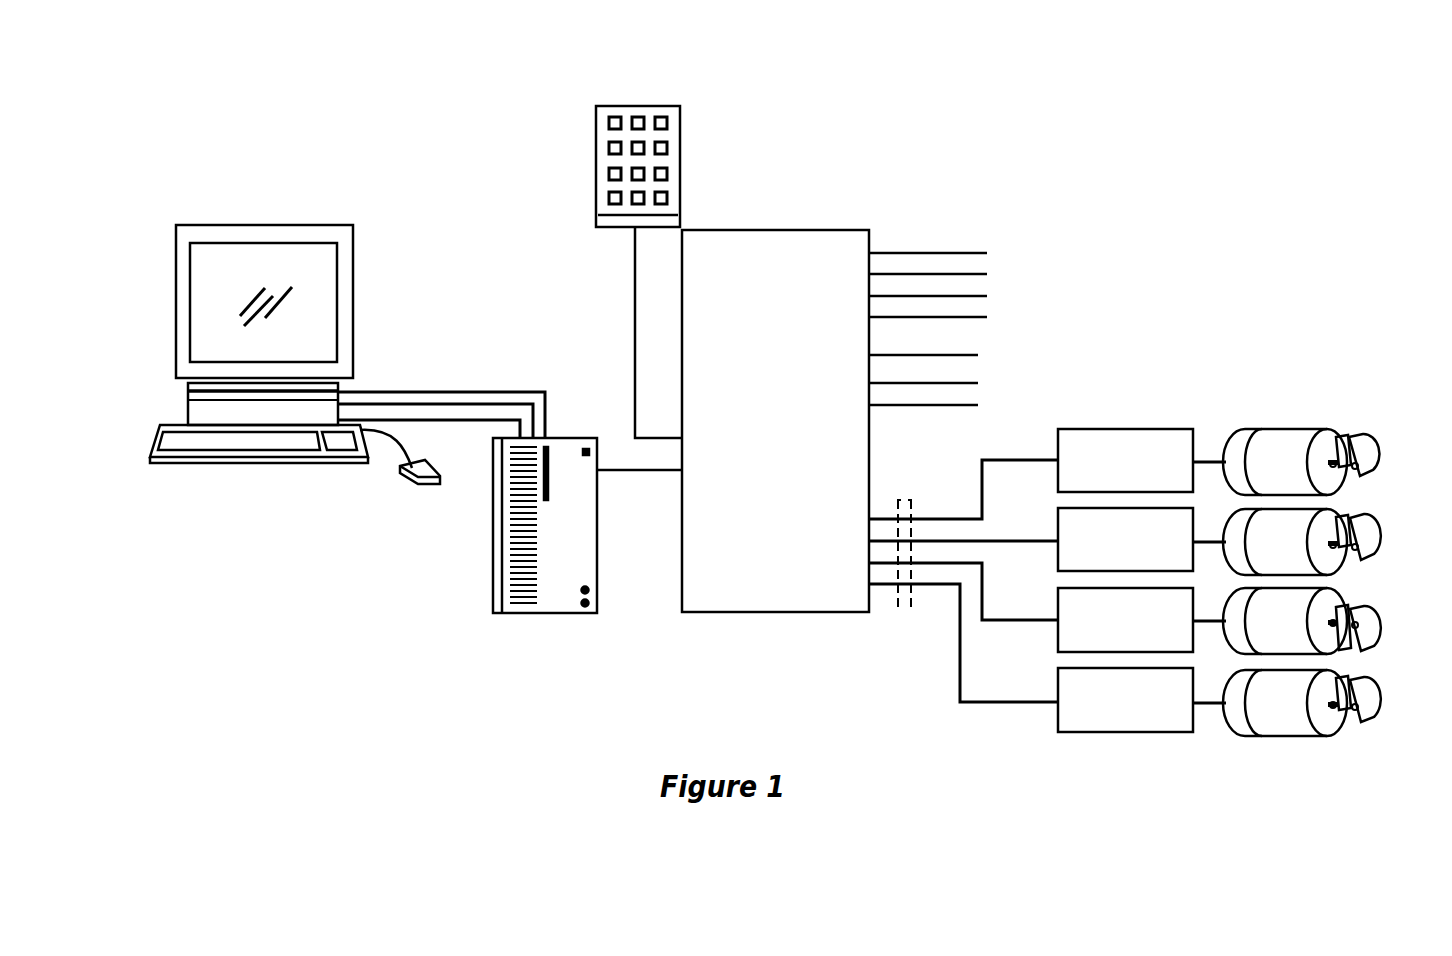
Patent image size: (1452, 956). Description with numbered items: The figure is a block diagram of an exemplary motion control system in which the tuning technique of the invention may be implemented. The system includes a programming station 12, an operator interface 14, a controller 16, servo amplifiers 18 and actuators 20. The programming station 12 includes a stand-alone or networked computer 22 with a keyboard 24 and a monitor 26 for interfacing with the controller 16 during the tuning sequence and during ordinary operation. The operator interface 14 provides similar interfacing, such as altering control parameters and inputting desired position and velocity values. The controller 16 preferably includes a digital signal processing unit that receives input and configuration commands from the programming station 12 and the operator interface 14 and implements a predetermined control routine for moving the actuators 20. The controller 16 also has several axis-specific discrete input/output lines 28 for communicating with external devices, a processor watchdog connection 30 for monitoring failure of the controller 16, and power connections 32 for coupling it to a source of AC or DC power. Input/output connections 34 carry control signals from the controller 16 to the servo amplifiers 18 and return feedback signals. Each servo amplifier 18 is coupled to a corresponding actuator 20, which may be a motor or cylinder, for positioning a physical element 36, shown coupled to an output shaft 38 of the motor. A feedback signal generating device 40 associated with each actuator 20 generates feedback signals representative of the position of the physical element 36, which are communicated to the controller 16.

The programming station 12 is at (430, 597).
The operator interface 14 is at (681, 137).
The controller 16 is at (820, 229).
The servo amplifiers 18 is at (1196, 447).
The actuators 20 is at (1285, 525).
The computer 22 is at (570, 437).
The keyboard 24 is at (160, 430).
The monitor 26 is at (353, 252).
The discrete input/output lines 28 is at (988, 247).
The processor watchdog connection 30 is at (940, 356).
The power connections 32 is at (988, 376).
The input/output connections 34 is at (905, 614).
The physical element 36 is at (1365, 437).
The output shaft 38 is at (1340, 440).
The feedback signal generating device 40 is at (1243, 478).